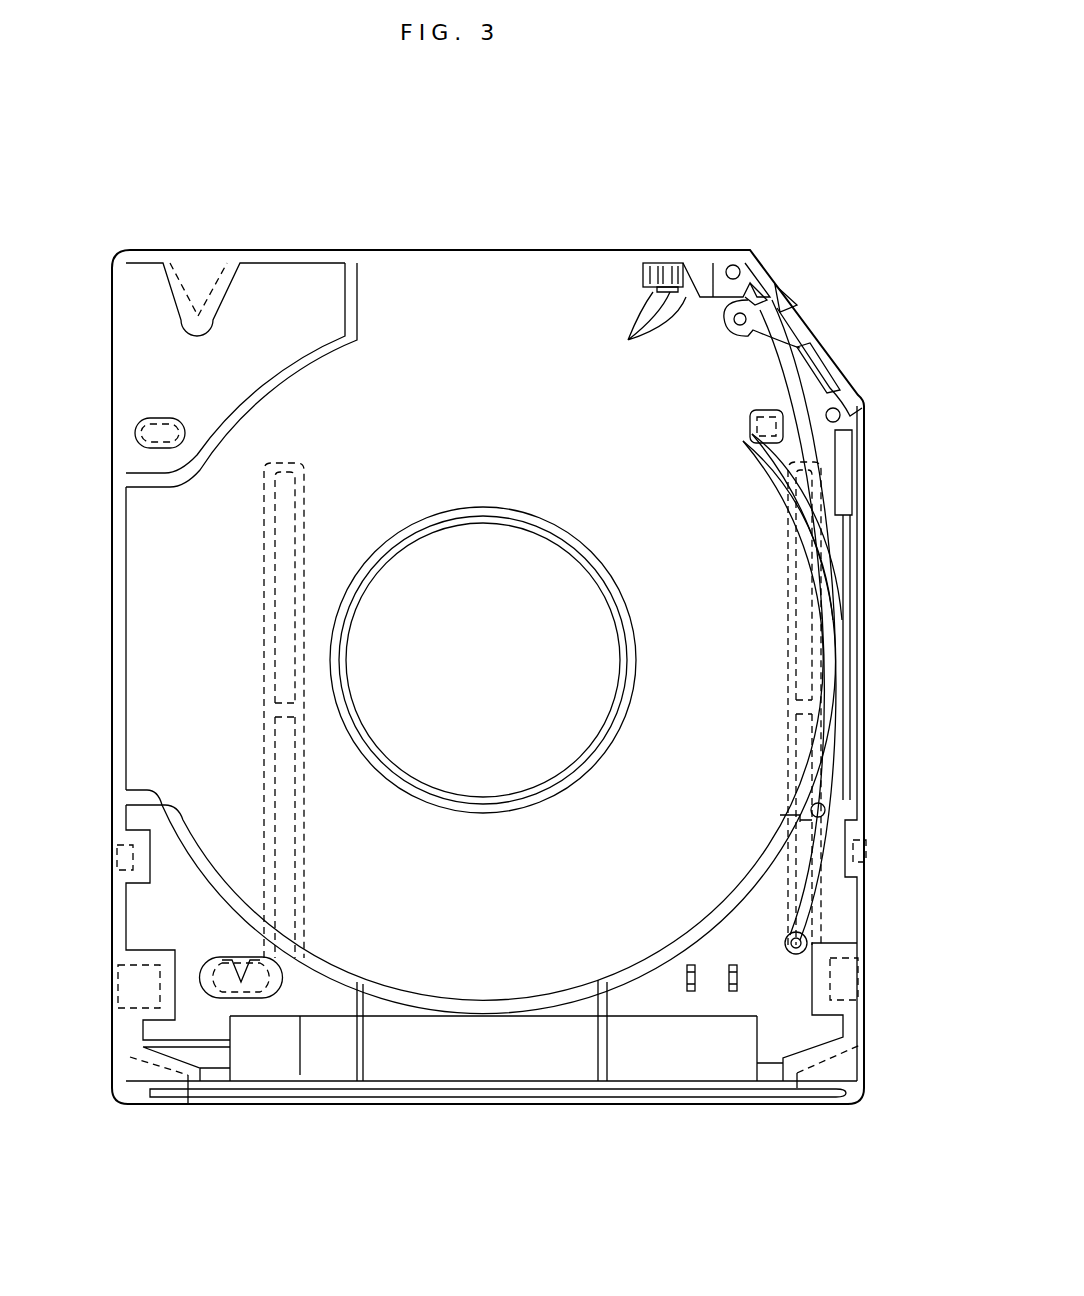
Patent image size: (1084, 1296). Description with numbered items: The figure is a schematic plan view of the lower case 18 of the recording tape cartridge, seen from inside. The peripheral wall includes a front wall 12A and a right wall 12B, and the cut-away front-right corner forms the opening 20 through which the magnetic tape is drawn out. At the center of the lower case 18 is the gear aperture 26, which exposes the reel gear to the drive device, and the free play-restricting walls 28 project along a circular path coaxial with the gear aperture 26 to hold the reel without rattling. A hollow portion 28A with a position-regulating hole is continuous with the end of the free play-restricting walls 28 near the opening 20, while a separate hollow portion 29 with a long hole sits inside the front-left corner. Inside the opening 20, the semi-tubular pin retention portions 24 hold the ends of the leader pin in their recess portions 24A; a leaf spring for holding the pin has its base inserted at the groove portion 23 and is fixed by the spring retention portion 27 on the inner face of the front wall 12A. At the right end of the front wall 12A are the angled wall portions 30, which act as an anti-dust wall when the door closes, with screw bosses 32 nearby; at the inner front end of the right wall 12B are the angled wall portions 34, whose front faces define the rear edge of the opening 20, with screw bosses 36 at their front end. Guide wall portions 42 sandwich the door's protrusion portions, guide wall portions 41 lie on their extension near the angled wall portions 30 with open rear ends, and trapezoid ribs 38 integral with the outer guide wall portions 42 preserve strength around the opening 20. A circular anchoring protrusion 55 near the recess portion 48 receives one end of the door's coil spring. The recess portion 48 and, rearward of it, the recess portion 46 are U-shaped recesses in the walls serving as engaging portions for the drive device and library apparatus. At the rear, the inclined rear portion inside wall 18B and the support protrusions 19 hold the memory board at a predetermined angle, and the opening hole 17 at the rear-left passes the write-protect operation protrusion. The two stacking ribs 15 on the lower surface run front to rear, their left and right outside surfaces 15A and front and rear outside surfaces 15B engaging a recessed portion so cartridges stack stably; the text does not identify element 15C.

The lower case 18 is at (521, 157).
The front wall 12A is at (406, 250).
The right wall 12B is at (866, 652).
The free play-restricting walls 28 is at (308, 378).
The hollow portion 28A is at (750, 422).
The hollow portion 29 is at (158, 417).
The gear aperture 26 is at (472, 518).
The stacking ribs 15 is at (265, 668).
The outside surface 15A is at (268, 728).
The outside surface 15B is at (286, 464).
The shutter connecting portion 15C is at (304, 780).
The groove portion 23 is at (672, 262).
The spring retention portion 27 is at (647, 331).
The screw bosses 32 is at (733, 263).
The angled wall portions 30 is at (770, 268).
The guide wall portions 41 is at (793, 290).
The opening 20 is at (814, 320).
The ribs 38 is at (826, 358).
The screw bosses 36 is at (841, 415).
The pin retention portions 24 is at (730, 322).
The recess portions 24A is at (744, 333).
The angled wall portions 34 is at (830, 487).
The anchoring protrusion 55 is at (812, 800).
The guide wall portions 42 is at (795, 910).
The recess portion 48 is at (116, 850).
The recess portion 46 is at (128, 985).
The opening hole 17 is at (240, 962).
The support protrusions 19 is at (732, 962).
The rear portion inside wall 18B is at (630, 1056).